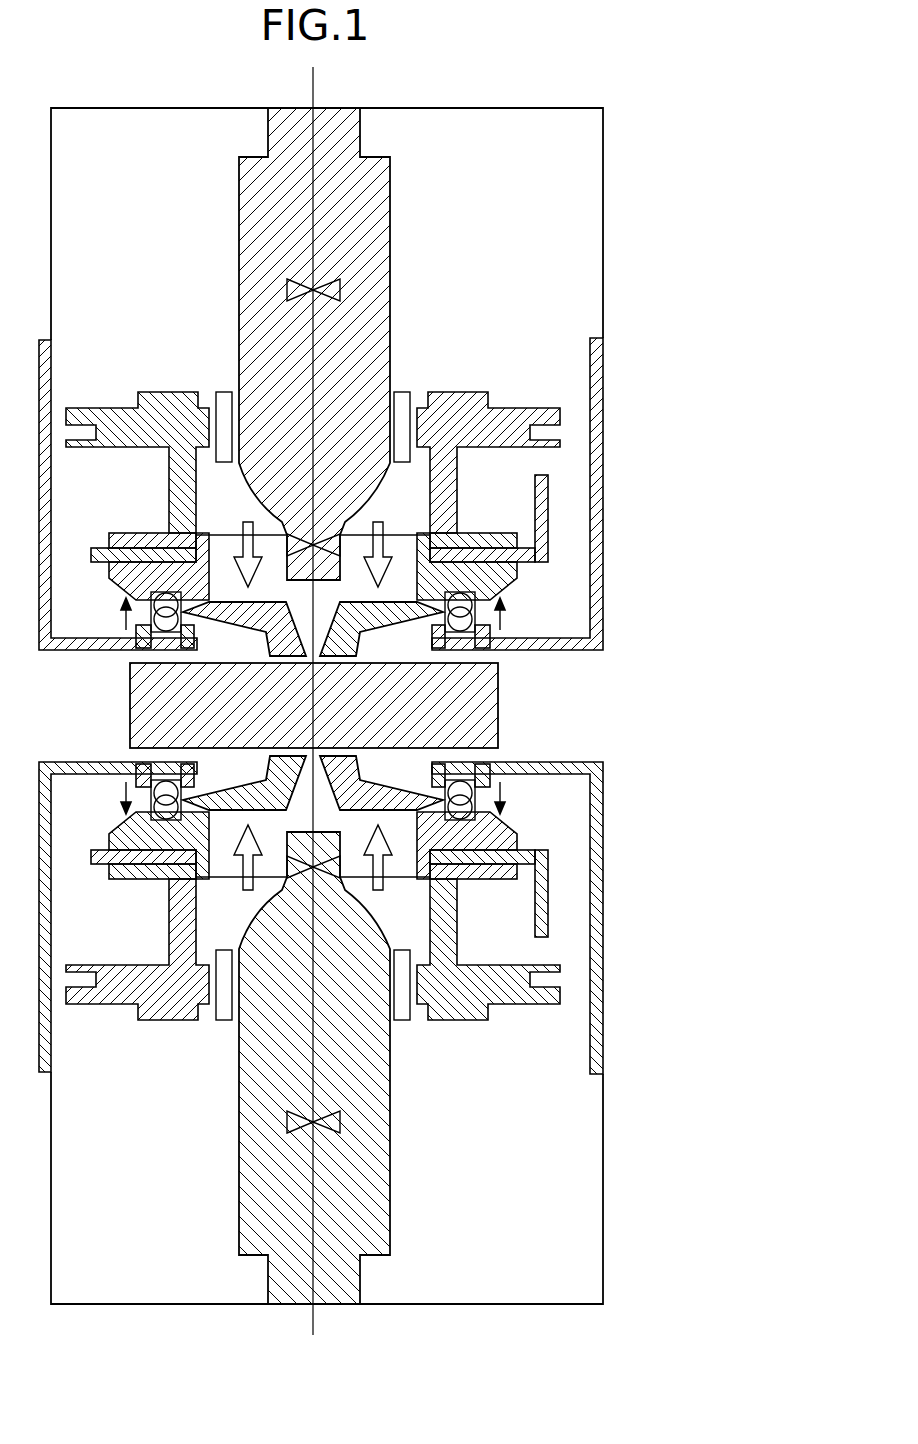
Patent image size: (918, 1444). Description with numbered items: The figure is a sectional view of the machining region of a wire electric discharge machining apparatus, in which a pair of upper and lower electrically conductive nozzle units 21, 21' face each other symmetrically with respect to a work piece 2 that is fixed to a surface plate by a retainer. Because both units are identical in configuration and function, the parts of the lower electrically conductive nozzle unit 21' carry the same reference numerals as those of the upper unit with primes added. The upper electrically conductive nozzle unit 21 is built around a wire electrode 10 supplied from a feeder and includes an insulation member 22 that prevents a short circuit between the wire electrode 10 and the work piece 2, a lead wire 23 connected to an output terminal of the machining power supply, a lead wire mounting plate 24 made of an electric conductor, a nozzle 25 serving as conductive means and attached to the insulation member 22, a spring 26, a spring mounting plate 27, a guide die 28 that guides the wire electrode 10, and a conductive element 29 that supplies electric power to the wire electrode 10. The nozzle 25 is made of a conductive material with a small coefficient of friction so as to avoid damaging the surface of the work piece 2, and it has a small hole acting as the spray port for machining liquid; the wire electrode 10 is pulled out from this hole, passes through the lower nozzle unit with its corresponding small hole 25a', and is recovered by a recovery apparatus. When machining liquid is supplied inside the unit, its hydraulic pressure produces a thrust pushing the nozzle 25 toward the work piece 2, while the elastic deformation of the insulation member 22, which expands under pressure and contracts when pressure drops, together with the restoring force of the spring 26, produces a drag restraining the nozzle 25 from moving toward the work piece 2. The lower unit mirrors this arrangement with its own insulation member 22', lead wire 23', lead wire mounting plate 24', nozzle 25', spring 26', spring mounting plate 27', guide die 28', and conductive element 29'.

The wire electrode 10 is at (313, 92).
The conductive element 29 is at (342, 344).
The guide die 28 is at (272, 442).
The nozzle 25 is at (253, 520).
The insulation member 22 is at (360, 462).
The lead wire 23 is at (613, 508).
The spring mounting plate 27 is at (368, 379).
The lead wire mounting plate 24 is at (371, 550).
The upper electrically conductive nozzle unit 21 is at (381, 366).
The spring 26 is at (331, 590).
The work piece 2 is at (490, 703).
The small hole of the lower nozzle 25a' is at (253, 764).
The spring of the lower nozzle unit 26' is at (334, 822).
The lower electrically conductive nozzle unit 21' is at (384, 1046).
The lead wire mounting plate of the lower nozzle unit 24' is at (374, 859).
The spring mounting plate of the lower nozzle unit 27' is at (370, 1033).
The lead wire of the lower nozzle unit 23' is at (615, 903).
The insulation member of the lower nozzle unit 22' is at (362, 949).
The nozzle of the lower nozzle unit 25' is at (322, 970).
The guide die of the lower nozzle unit 28' is at (270, 969).
The conductive element of the lower nozzle unit 29' is at (345, 1068).